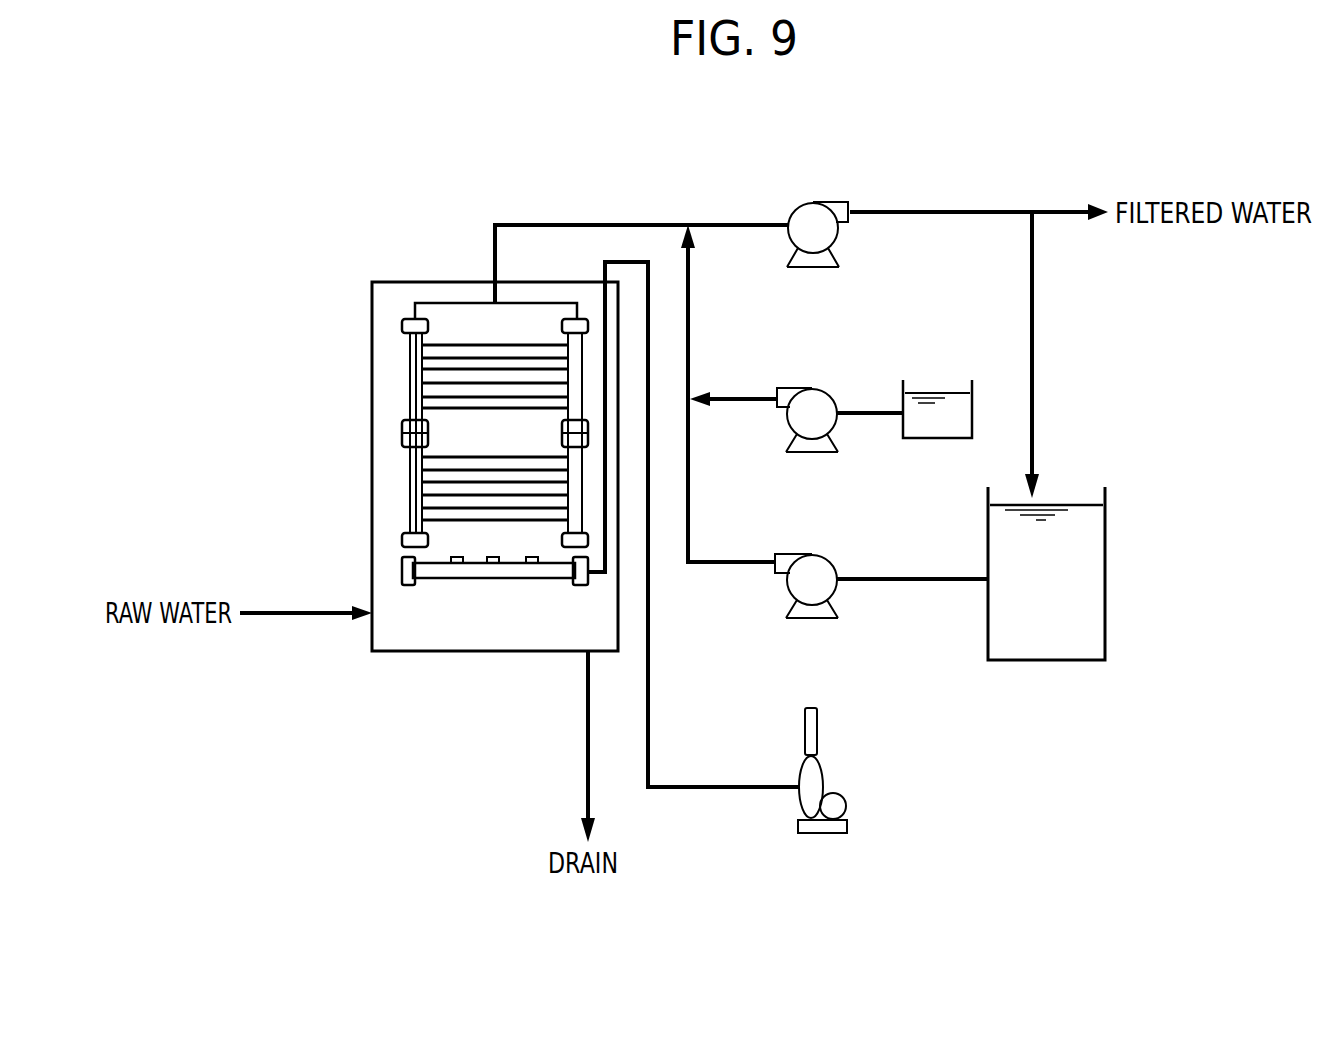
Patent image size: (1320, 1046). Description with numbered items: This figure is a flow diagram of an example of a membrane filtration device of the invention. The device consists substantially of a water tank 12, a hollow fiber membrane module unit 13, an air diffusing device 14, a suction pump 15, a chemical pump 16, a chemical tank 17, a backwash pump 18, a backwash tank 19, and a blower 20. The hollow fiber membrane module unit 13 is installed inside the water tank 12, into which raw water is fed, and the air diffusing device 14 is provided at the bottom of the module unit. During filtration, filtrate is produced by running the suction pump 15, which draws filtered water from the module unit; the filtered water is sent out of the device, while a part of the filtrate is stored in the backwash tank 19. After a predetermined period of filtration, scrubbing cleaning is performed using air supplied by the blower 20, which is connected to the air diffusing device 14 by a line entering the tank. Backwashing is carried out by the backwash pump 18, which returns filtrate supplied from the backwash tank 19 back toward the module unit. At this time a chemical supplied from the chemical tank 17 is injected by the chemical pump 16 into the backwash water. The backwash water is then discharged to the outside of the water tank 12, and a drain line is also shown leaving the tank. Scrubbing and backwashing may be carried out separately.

The water tank 12 is at (453, 258).
The hollow fiber membrane module unit 13 is at (446, 386).
The air diffusing device 14 is at (452, 590).
The suction pump 15 is at (838, 237).
The chemical pump 16 is at (832, 430).
The chemical tank 17 is at (943, 438).
The backwash pump 18 is at (832, 597).
The backwash tank 19 is at (1105, 595).
The blower 20 is at (820, 833).